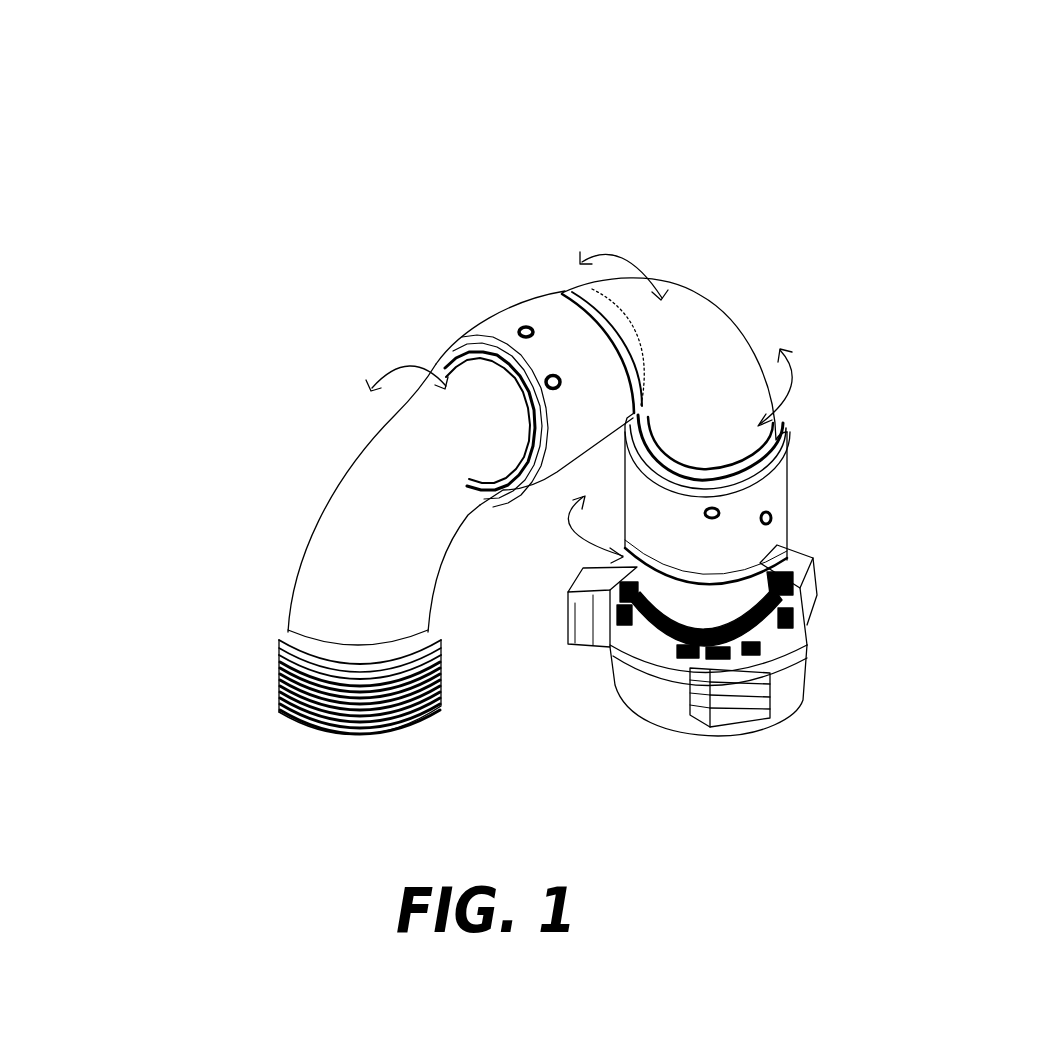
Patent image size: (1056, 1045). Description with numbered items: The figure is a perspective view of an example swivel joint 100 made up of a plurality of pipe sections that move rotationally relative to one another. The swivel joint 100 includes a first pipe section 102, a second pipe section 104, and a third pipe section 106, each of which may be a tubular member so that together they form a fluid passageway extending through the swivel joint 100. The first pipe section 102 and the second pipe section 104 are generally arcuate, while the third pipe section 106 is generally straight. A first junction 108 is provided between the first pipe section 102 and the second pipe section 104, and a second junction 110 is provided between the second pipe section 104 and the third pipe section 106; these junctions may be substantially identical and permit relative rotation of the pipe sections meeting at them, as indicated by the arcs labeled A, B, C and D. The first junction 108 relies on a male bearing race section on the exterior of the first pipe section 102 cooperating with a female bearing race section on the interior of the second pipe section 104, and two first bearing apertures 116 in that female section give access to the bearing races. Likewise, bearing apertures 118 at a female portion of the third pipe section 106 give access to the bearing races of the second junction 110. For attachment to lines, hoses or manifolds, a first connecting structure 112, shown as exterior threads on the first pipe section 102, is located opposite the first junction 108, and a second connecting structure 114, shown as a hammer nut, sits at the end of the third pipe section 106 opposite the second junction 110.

The swivel joint 100 is at (888, 125).
The first pipe section 102 is at (305, 434).
The second pipe section 104 is at (744, 298).
The third pipe section 106 is at (852, 579).
The first junction 108 is at (389, 283).
The second junction 110 is at (809, 459).
The first connecting structure 112 is at (285, 706).
The second connecting structure 114 is at (801, 630).
The first bearing apertures 116 is at (522, 326).
The bearing apertures 118 is at (718, 511).